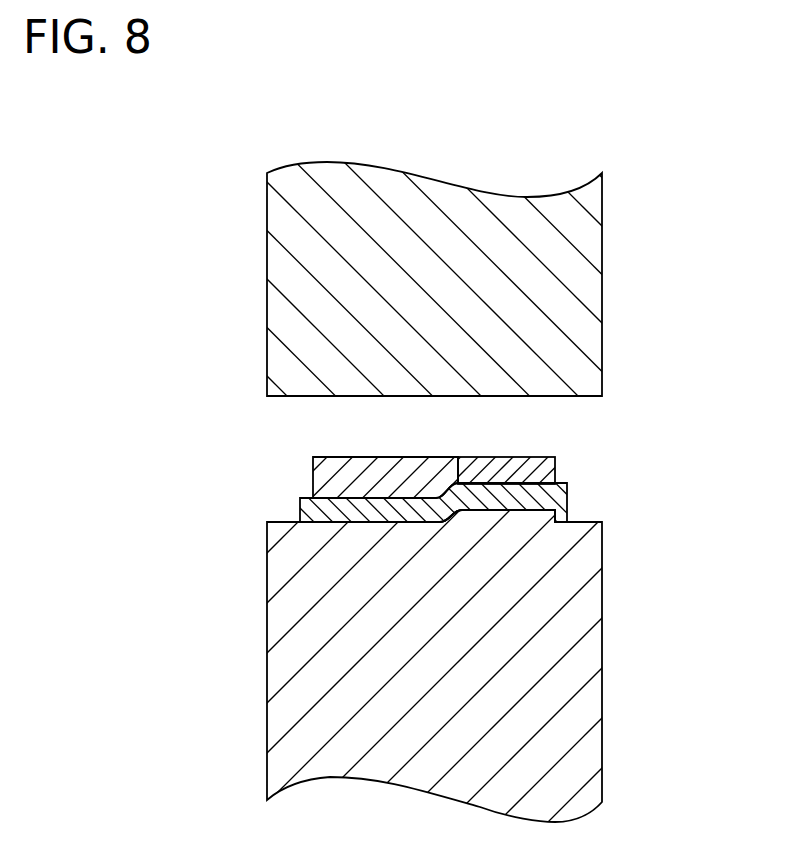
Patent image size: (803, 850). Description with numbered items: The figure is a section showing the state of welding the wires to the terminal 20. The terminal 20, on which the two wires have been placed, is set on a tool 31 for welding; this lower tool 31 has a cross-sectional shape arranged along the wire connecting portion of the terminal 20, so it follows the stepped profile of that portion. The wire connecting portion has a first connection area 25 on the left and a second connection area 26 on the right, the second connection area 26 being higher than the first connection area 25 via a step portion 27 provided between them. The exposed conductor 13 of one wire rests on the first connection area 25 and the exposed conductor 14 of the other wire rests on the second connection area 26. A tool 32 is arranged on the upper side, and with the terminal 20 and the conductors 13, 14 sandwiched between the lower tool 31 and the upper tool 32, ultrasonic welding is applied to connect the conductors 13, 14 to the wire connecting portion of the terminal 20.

The tool 32 is at (602, 297).
The tool for welding 31 is at (602, 638).
The terminal 20 is at (570, 495).
The conductor 13 is at (312, 470).
The conductor 14 is at (555, 463).
The second connection area 26 is at (530, 477).
The first connection area 25 is at (357, 498).
The step portion 27 is at (463, 510).